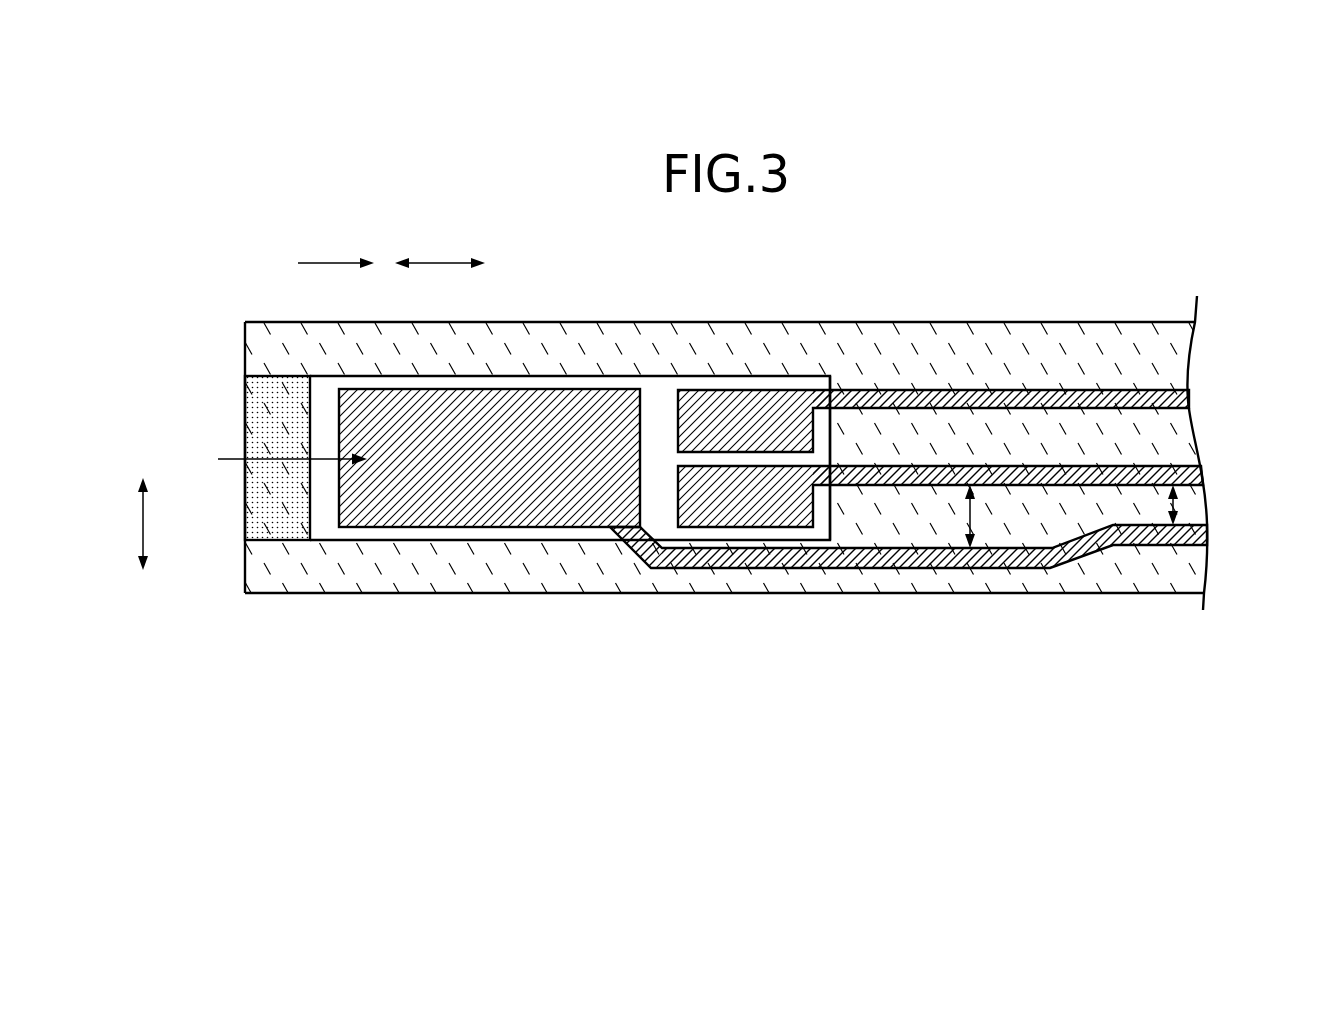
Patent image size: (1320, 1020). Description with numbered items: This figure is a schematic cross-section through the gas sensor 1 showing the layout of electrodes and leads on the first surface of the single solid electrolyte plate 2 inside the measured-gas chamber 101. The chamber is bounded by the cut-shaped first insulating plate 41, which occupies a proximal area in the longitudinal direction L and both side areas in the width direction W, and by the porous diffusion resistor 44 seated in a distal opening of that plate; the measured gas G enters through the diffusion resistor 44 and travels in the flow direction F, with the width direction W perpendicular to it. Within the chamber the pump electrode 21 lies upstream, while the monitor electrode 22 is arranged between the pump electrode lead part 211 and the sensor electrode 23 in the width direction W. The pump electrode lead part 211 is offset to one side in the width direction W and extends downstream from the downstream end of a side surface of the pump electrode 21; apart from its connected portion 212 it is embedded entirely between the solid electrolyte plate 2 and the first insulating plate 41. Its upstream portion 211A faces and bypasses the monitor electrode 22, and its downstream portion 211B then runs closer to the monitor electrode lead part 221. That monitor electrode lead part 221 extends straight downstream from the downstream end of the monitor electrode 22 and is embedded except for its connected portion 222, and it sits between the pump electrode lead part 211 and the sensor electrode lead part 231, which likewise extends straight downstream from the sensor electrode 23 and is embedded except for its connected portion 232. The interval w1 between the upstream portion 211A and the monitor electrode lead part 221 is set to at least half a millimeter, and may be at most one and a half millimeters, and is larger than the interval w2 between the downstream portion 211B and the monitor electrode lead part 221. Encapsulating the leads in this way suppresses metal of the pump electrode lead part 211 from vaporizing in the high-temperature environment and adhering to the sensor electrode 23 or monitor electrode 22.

The gas sensor 1 is at (983, 283).
The solid electrolyte plate 2 is at (821, 534).
The pump electrode 21 is at (453, 470).
The monitor electrode 22 is at (745, 495).
The sensor electrode 23 is at (740, 412).
The first insulating plate 41 is at (503, 350).
The diffusion resistor 44 is at (275, 410).
The measured-gas chamber 101 is at (498, 533).
The pump electrode lead part 211 is at (1042, 572).
The upstream portion 211A is at (697, 567).
The downstream portion 211B is at (1140, 535).
The portion connected with the pump electrode 212 is at (630, 530).
The monitor electrode lead part 221 is at (1148, 475).
The portion connected with the monitor electrode 222 is at (830, 460).
The sensor electrode lead part 231 is at (1102, 398).
The portion connected with the sensor electrode 232 is at (822, 398).
The measured gas G is at (233, 460).
The width direction W is at (126, 524).
The longitudinal direction L is at (440, 249).
The flow direction F is at (336, 249).
The interval w1 is at (970, 520).
The interval w2 is at (1173, 503).